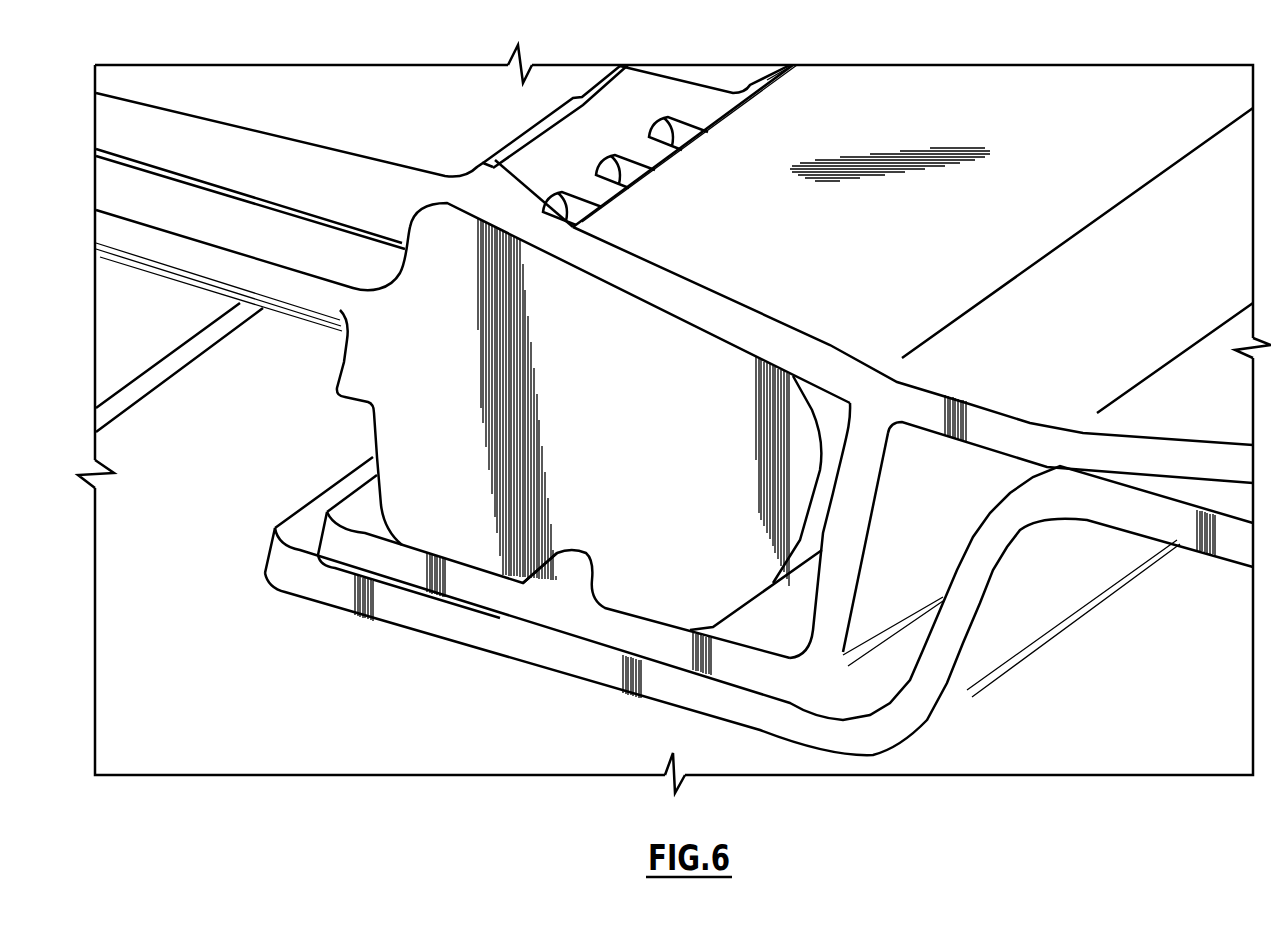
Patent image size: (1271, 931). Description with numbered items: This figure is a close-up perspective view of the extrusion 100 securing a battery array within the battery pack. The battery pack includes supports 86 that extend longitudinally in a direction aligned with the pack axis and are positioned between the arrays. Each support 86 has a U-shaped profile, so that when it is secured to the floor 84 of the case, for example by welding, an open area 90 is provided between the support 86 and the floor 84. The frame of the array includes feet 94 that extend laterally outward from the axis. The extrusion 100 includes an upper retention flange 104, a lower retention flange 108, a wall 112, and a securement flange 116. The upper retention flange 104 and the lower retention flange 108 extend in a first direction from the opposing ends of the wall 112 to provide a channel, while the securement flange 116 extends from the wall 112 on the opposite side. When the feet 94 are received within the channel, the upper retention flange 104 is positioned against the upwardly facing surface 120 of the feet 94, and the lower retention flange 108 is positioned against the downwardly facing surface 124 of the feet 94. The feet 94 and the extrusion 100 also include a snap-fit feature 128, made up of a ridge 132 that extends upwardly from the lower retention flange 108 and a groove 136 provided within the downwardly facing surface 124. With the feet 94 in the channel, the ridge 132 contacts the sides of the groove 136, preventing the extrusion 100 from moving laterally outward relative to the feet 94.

The floor 84 is at (522, 752).
The support 86 is at (978, 548).
The open area 90 is at (1188, 705).
The foot 94 is at (700, 393).
The extrusion 100 is at (1083, 100).
The upper retention flange 104 is at (808, 115).
The lower retention flange 108 is at (778, 634).
The wall 112 is at (958, 693).
The securement flange 116 is at (1145, 425).
The upwardly facing surface 120 is at (655, 300).
The downwardly facing surface 124 is at (627, 620).
The snap-fit feature 128 is at (545, 600).
The ridge 132 is at (588, 562).
The groove 136 is at (535, 547).